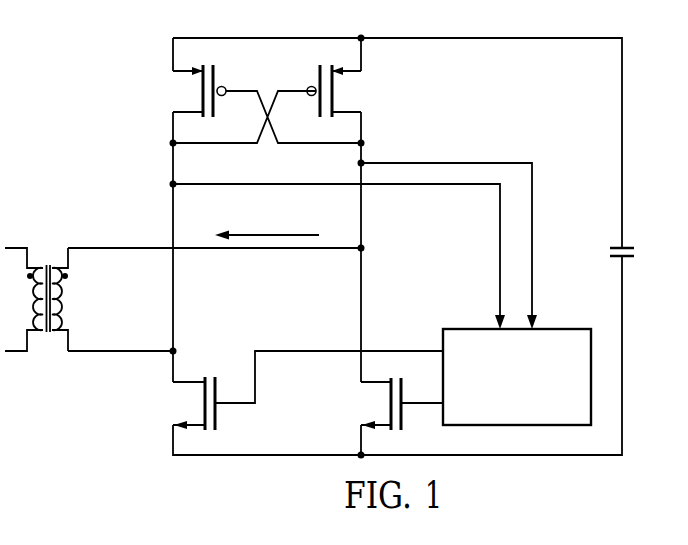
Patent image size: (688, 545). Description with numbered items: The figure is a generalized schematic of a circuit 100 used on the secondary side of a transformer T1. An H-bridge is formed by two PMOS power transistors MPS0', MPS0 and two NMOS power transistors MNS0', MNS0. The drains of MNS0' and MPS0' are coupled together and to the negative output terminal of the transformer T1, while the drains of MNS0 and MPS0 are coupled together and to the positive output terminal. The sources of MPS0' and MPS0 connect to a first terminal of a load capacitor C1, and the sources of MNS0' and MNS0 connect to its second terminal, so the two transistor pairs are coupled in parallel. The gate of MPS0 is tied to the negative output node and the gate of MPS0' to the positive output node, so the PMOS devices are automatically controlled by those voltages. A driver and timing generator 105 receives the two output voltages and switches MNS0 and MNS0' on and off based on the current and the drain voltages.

The circuit 100 is at (80, 57).
The driver and timing generator 105 is at (557, 329).
The transformer T1 is at (36, 287).
The load capacitor C1 is at (635, 258).
The PMOS power transistor MPS0 is at (359, 91).
The PMOS power transistor MPS0' is at (172, 91).
The NMOS power transistor MNS0 is at (356, 404).
The NMOS power transistor MNS0' is at (167, 403).